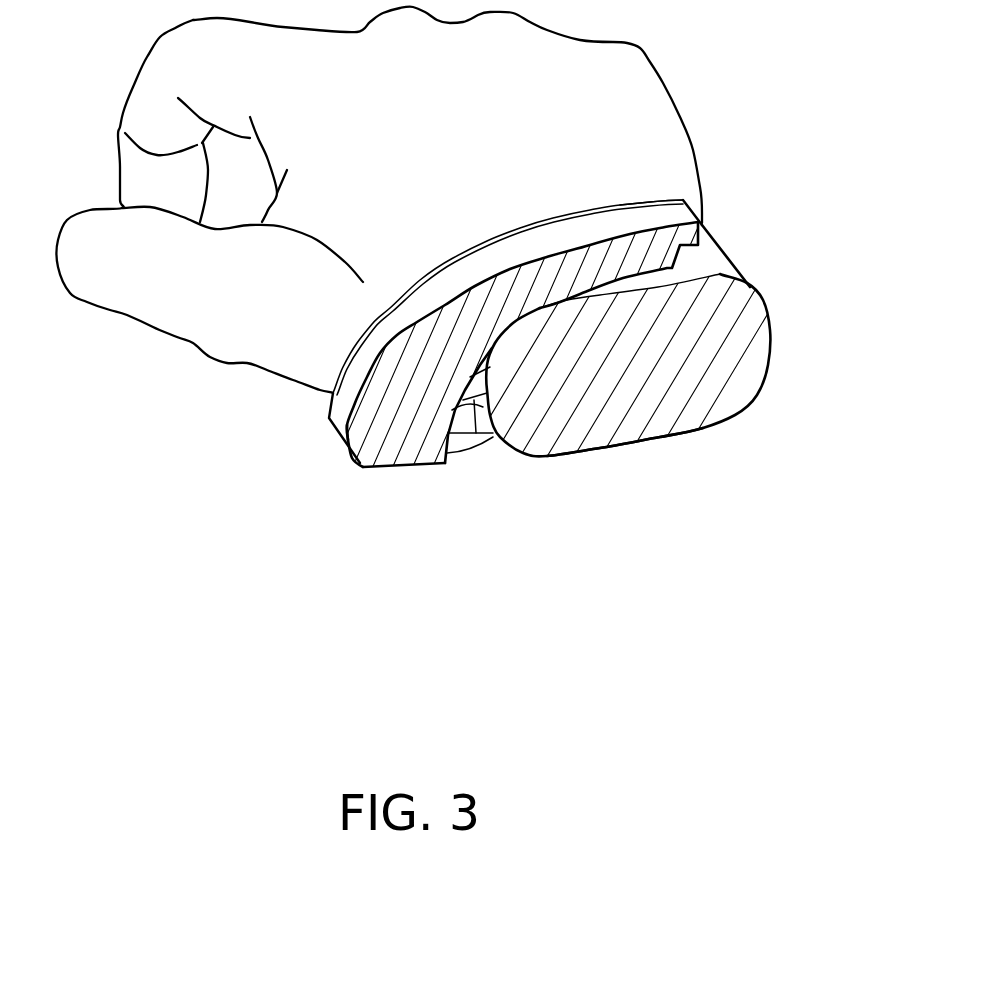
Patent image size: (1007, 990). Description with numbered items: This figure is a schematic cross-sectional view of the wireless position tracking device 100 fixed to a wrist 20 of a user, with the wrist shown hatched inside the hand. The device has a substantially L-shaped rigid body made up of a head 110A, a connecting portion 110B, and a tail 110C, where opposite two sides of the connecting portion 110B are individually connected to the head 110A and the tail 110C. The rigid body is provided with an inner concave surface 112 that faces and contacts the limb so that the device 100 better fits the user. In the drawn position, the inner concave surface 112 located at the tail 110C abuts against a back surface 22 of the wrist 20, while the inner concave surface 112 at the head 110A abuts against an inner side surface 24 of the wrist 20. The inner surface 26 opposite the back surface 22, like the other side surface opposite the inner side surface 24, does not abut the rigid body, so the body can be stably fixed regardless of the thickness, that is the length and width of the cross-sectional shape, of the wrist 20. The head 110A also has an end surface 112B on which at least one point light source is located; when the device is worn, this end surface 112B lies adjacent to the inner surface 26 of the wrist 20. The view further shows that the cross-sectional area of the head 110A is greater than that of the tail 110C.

The wireless position tracking device 100 is at (378, 452).
The head 110A is at (330, 398).
The connecting portion 110B is at (456, 275).
The tail 110C is at (628, 218).
The inner concave surface 112 is at (568, 246).
The end surface 112B is at (402, 469).
The wrist 20 is at (733, 367).
The back surface 22 is at (660, 289).
The inner side surface 24 is at (501, 384).
The inner surface 26 is at (633, 448).